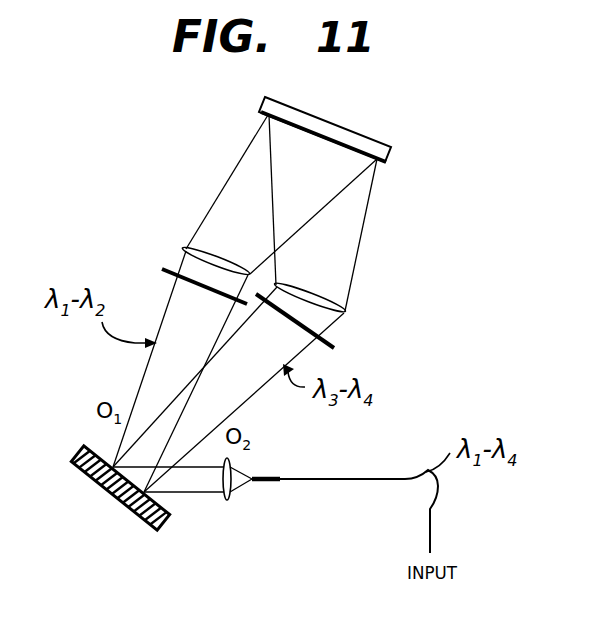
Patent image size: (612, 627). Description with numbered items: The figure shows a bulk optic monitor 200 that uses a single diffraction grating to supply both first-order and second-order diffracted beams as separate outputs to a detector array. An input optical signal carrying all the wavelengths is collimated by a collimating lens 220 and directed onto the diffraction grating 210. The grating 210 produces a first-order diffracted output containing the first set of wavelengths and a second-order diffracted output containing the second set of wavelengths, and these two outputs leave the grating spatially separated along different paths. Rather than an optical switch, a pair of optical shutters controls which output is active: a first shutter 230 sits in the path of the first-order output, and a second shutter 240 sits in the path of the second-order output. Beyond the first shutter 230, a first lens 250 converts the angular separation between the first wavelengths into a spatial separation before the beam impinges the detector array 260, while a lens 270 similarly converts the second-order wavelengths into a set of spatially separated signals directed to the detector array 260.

The monitor 200 is at (445, 362).
The diffraction grating 210 is at (102, 487).
The collimating lens 220 is at (229, 500).
The first shutter 230 is at (162, 270).
The second shutter 240 is at (334, 341).
The first lens 250 is at (187, 250).
The detector array 260 is at (336, 126).
The lens 270 is at (344, 311).